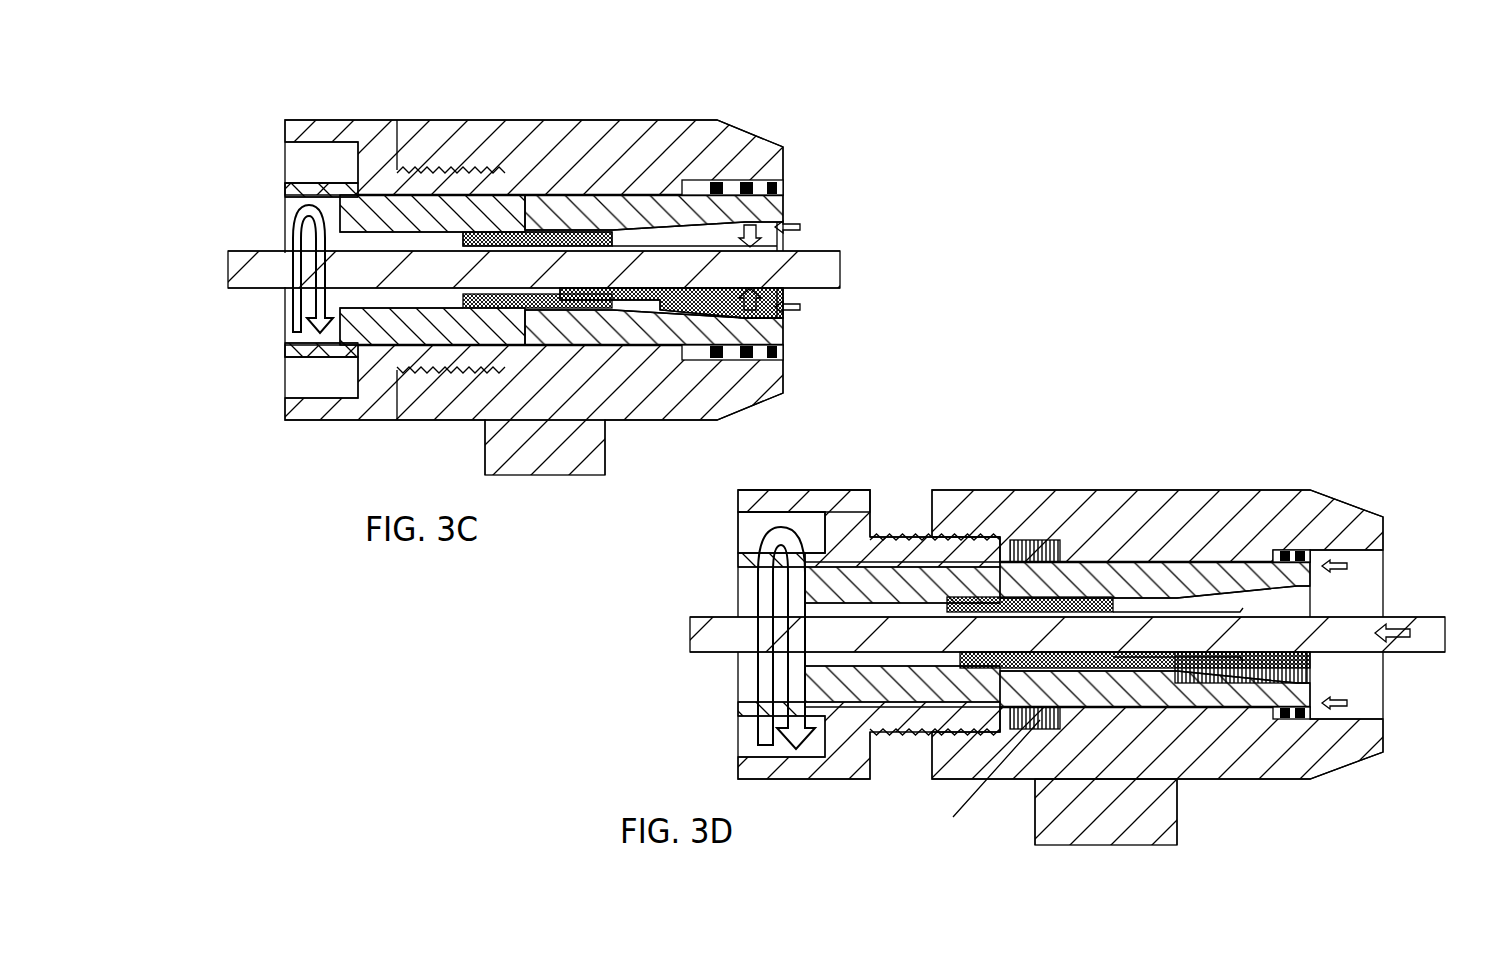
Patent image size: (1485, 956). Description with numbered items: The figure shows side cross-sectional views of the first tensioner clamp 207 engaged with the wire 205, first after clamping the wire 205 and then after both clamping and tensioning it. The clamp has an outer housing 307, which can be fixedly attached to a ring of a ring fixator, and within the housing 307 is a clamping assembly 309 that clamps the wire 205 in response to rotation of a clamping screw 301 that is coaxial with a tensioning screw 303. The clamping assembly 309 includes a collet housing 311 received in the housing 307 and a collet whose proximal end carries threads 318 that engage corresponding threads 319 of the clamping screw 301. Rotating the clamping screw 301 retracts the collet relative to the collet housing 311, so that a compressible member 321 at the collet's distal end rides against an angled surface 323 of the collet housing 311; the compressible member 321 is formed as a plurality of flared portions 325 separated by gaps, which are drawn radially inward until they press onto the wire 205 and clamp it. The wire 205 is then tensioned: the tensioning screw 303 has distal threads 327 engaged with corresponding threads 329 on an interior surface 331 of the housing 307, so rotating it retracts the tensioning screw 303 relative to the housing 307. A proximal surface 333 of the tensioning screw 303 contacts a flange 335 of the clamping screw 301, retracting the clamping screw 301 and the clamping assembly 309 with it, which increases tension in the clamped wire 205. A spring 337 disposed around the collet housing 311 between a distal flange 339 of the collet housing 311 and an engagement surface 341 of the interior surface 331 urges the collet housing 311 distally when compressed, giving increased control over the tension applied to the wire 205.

In FIG. 3C, the wire 205 is at (818, 278).
In FIG. 3D, the wire 205 is at (1430, 627).
In FIG. 3C, the first tensioner clamp 207 is at (264, 119).
In FIG. 3D, the first tensioner clamp 207 is at (702, 477).
In FIG. 3C, the clamping screw 301 is at (285, 190).
In FIG. 3D, the clamping screw 301 is at (737, 562).
In FIG. 3C, the tensioning screw 303 is at (283, 418).
In FIG. 3D, the tensioning screw 303 is at (745, 765).
In FIG. 3C, the outer housing 307 is at (763, 133).
In FIG. 3D, the outer housing 307 is at (1293, 490).
In FIG. 3C, the clamping assembly 309 is at (600, 194).
In FIG. 3D, the clamping assembly 309 is at (1147, 561).
In FIG. 3C, the collet housing 311 is at (665, 205).
In FIG. 3D, the collet housing 311 is at (1230, 577).
In FIG. 3C, the threads 318 is at (480, 230).
In FIG. 3C, the threads 319 is at (507, 233).
In FIG. 3C, the compressible member 321 is at (780, 321).
In FIG. 3C, the angled surface 323 is at (767, 332).
In FIG. 3C, the flared portions 325 is at (671, 303).
In FIG. 3D, the distal threads 327 is at (997, 520).
In FIG. 3D, the threads 329 is at (1018, 600).
In FIG. 3D, the interior surface 331 is at (1053, 543).
In FIG. 3D, the proximal surface 333 is at (813, 533).
In FIG. 3D, the flange 335 is at (767, 543).
In FIG. 3C, the spring 337 is at (753, 355).
In FIG. 3D, the spring 337 is at (1307, 550).
In FIG. 3C, the distal flange 339 is at (785, 195).
In FIG. 3D, the distal flange 339 is at (1320, 557).
In FIG. 3D, the engagement surface 341 is at (1277, 553).